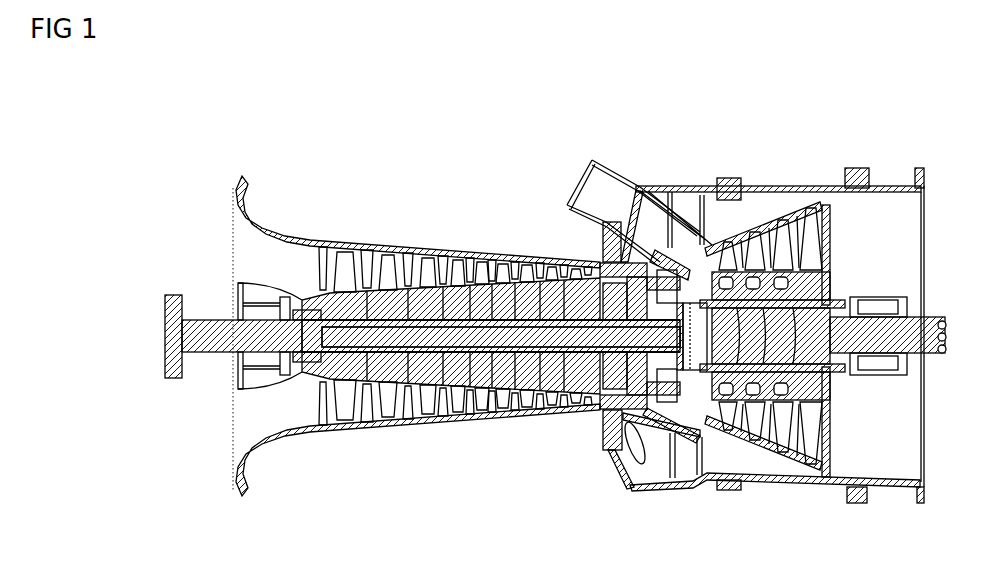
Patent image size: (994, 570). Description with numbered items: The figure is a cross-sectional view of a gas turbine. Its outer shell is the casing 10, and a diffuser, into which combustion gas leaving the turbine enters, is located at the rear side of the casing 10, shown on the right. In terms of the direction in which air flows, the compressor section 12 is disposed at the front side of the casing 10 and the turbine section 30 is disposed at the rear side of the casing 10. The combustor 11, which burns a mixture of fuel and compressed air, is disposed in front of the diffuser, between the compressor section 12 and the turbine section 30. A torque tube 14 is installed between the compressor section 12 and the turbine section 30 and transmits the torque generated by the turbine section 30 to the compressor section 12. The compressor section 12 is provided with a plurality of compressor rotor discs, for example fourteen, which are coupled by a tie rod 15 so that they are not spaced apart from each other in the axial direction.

The casing 10 is at (450, 252).
The combustor 11 is at (598, 152).
The compressor section 12 is at (600, 532).
The torque tube 14 is at (672, 372).
The tie rod 15 is at (277, 353).
The turbine section 30 is at (826, 532).